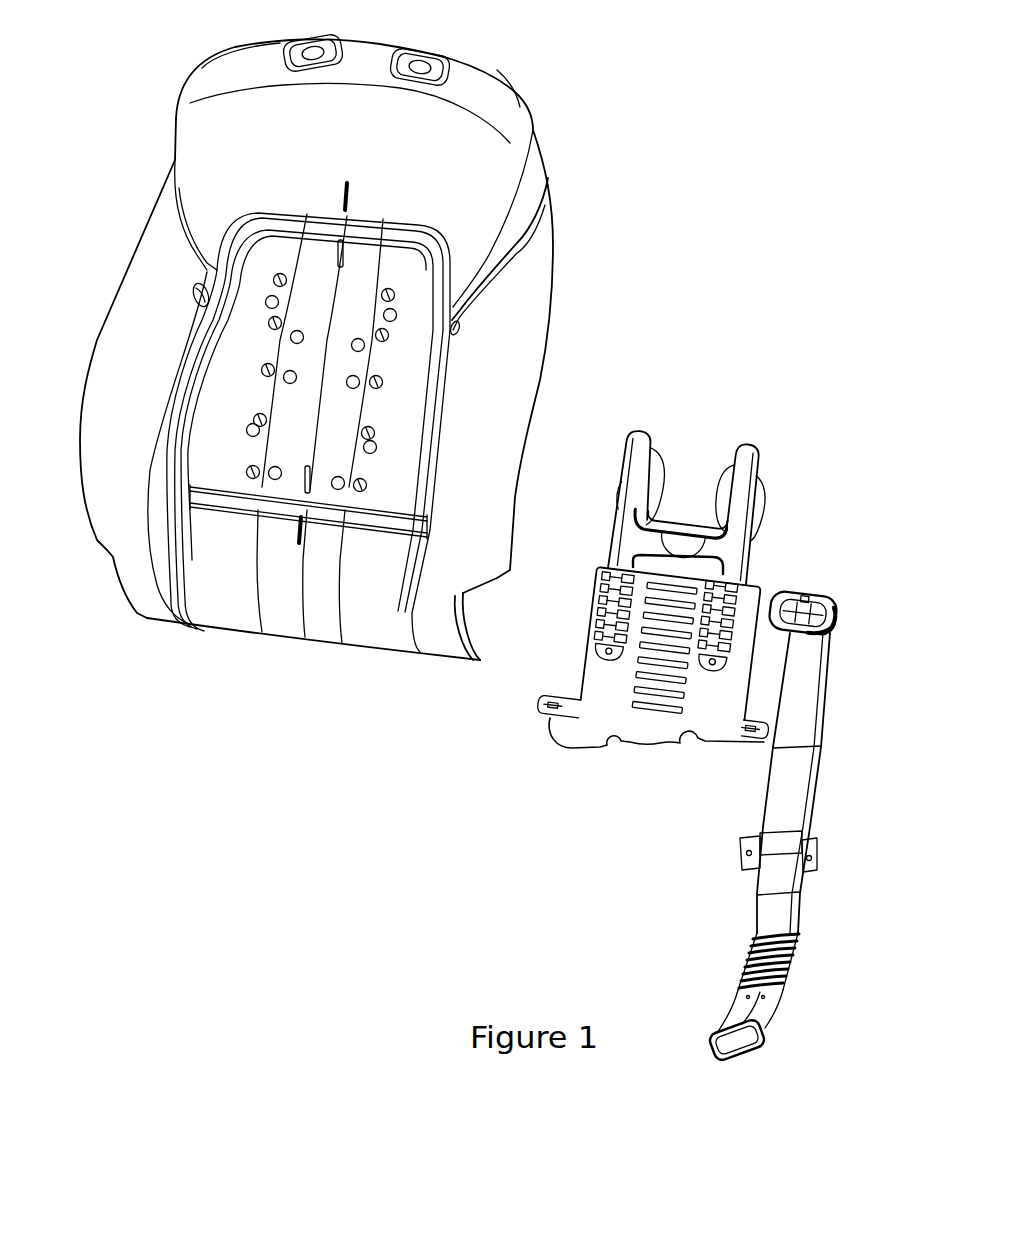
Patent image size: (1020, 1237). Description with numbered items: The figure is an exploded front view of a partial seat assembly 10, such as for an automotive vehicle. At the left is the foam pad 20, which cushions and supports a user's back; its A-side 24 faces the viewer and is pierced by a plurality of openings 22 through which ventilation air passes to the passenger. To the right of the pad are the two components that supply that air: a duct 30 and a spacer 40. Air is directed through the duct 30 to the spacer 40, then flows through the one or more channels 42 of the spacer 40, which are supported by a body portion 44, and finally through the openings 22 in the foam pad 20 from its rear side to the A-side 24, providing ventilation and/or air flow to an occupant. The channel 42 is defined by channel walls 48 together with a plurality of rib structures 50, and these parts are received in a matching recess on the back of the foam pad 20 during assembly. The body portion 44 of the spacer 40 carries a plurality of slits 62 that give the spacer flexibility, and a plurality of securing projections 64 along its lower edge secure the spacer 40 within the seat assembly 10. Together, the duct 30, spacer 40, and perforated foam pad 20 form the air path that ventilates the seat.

The seat assembly 10 is at (660, 57).
The foam pad 20 is at (534, 129).
The openings 22 is at (253, 419).
The A-side 24 is at (248, 364).
The duct 30 is at (815, 794).
The spacer 40 is at (767, 443).
The channels 42 is at (638, 448).
The body portion 44 is at (607, 690).
The channel walls 48 is at (612, 531).
The rib structures 50 is at (603, 607).
The slits 62 is at (638, 677).
The securing projections 64 is at (573, 739).